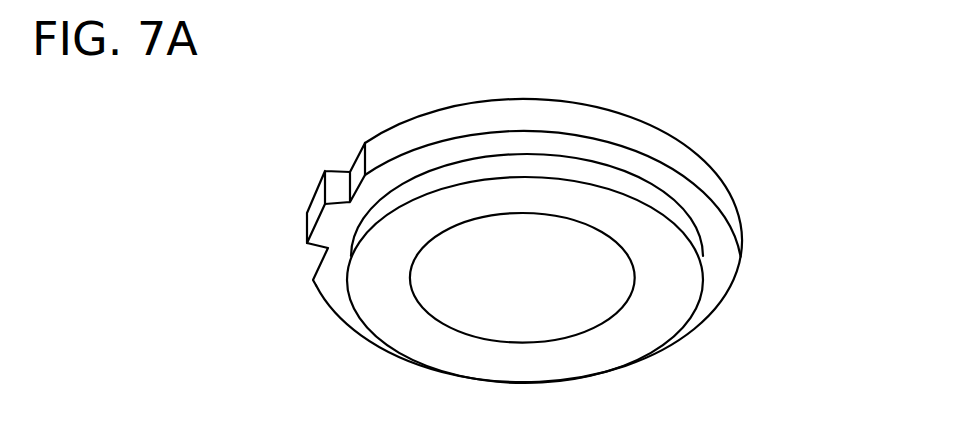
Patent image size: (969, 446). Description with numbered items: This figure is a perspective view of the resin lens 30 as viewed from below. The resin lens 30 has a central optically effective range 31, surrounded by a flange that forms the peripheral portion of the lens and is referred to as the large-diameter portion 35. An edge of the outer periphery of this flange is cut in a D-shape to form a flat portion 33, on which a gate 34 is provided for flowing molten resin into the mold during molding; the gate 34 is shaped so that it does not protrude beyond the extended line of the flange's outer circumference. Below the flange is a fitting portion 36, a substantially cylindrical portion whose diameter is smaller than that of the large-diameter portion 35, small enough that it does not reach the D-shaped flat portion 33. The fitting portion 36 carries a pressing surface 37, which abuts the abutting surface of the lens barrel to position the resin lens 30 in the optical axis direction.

The resin lens 30 is at (722, 151).
The optically effective range 31 is at (595, 288).
The flat portion 33 is at (323, 257).
The gate 34 is at (325, 223).
The large-diameter portion 35 is at (515, 118).
The fitting portion 36 is at (442, 172).
The pressing surface 37 is at (387, 323).